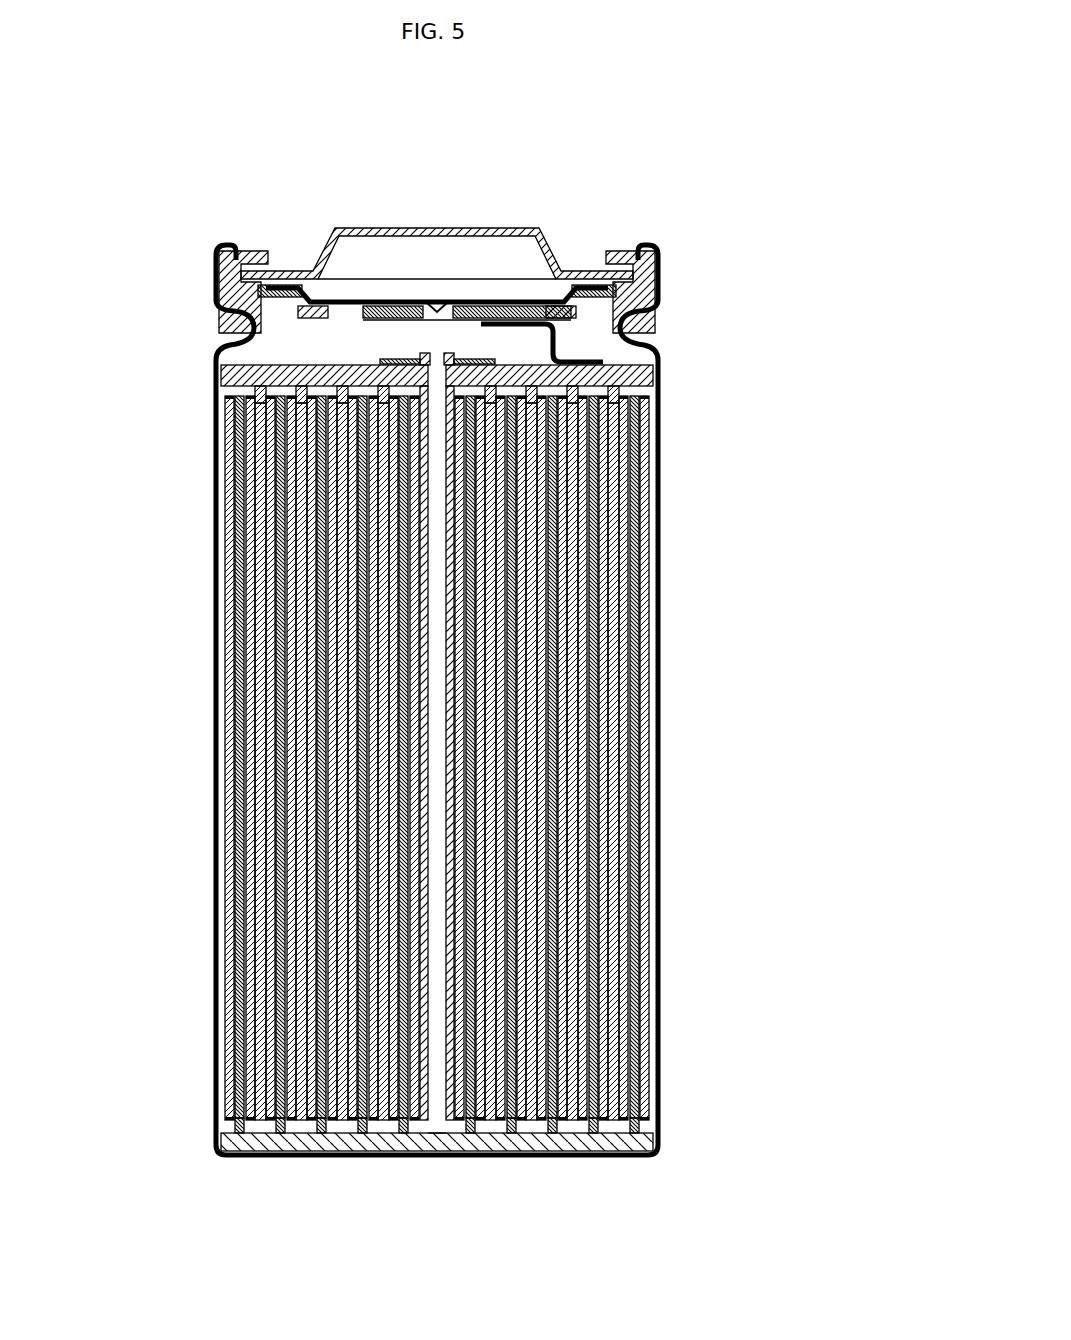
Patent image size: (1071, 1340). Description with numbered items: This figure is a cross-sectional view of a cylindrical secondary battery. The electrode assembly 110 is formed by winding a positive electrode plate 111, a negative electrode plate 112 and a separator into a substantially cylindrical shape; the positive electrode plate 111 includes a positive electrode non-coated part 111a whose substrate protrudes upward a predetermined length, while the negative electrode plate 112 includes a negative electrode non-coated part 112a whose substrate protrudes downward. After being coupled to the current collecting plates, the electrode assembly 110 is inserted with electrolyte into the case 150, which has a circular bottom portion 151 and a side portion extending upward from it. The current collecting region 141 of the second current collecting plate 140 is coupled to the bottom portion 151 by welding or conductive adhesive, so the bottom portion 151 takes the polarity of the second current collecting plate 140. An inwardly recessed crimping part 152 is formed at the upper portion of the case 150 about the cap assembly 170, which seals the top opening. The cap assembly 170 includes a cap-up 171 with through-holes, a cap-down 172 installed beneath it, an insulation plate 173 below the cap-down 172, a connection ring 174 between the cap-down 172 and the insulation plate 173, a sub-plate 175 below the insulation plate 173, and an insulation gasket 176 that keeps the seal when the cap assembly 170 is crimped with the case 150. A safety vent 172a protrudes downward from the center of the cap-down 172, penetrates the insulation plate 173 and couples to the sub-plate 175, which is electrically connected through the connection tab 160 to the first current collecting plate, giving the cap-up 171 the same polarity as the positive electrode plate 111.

The electrode assembly 110 is at (652, 803).
The positive electrode plate 111 is at (608, 453).
The positive electrode non-coated part 111a is at (623, 381).
The negative electrode plate 112 is at (638, 960).
The negative electrode non-coated part 112a is at (635, 1118).
The second current collecting plate 140 is at (440, 665).
The current collecting region 141 is at (435, 1132).
The case 150 is at (655, 557).
The bottom portion 151 is at (562, 1148).
The crimping part 152 is at (628, 240).
The connection tab 160 is at (548, 346).
The cap assembly 170 is at (473, 228).
The cap-up 171 is at (471, 220).
The cap-down 172 is at (437, 235).
The safety vent 172a is at (428, 300).
The insulation plate 173 is at (655, 288).
The connection ring 174 is at (582, 277).
The sub-plate 175 is at (368, 312).
The insulation gasket 176 is at (247, 238).